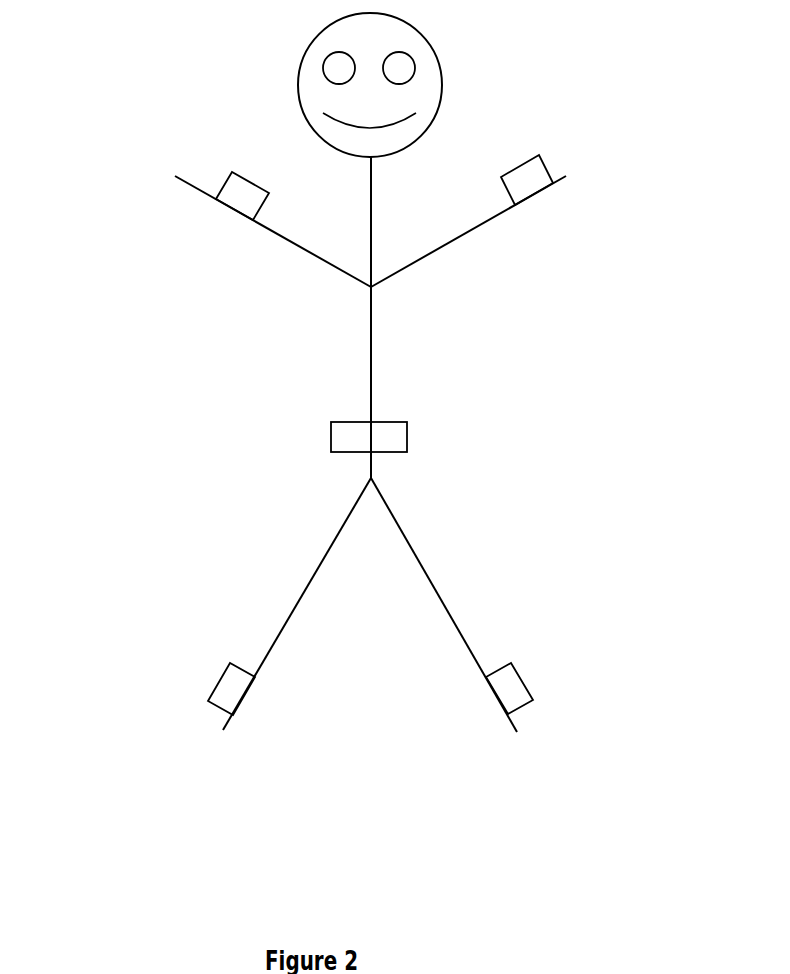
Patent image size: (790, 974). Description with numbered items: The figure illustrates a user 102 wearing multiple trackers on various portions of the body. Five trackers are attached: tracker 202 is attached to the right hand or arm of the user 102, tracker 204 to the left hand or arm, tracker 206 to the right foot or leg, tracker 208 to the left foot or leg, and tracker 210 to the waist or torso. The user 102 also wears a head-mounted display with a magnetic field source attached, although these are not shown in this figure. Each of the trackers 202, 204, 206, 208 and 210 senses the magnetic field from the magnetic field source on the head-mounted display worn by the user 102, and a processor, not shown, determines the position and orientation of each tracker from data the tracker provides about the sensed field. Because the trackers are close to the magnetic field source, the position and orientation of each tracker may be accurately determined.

The user 102 is at (408, 359).
The tracker 202 is at (232, 168).
The tracker 204 is at (538, 156).
The tracker 206 is at (243, 663).
The tracker 208 is at (500, 662).
The tracker 210 is at (362, 420).